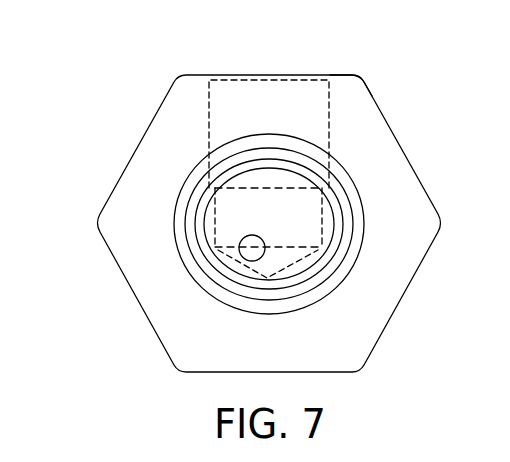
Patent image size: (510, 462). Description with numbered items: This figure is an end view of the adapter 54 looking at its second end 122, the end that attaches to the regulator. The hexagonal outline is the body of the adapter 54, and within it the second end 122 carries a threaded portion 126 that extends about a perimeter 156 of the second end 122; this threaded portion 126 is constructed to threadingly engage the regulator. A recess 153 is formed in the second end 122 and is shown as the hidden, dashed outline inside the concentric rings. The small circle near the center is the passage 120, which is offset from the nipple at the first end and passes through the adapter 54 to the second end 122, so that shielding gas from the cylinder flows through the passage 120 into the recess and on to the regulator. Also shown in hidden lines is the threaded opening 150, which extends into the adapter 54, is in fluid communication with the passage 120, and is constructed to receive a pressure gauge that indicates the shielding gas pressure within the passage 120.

The adapter 54 is at (364, 83).
The passage 120 is at (251, 259).
The second end 122 is at (407, 119).
The threaded portion 126 is at (340, 213).
The threaded opening 150 is at (214, 108).
The recess 153 is at (214, 218).
The perimeter 156 is at (204, 190).